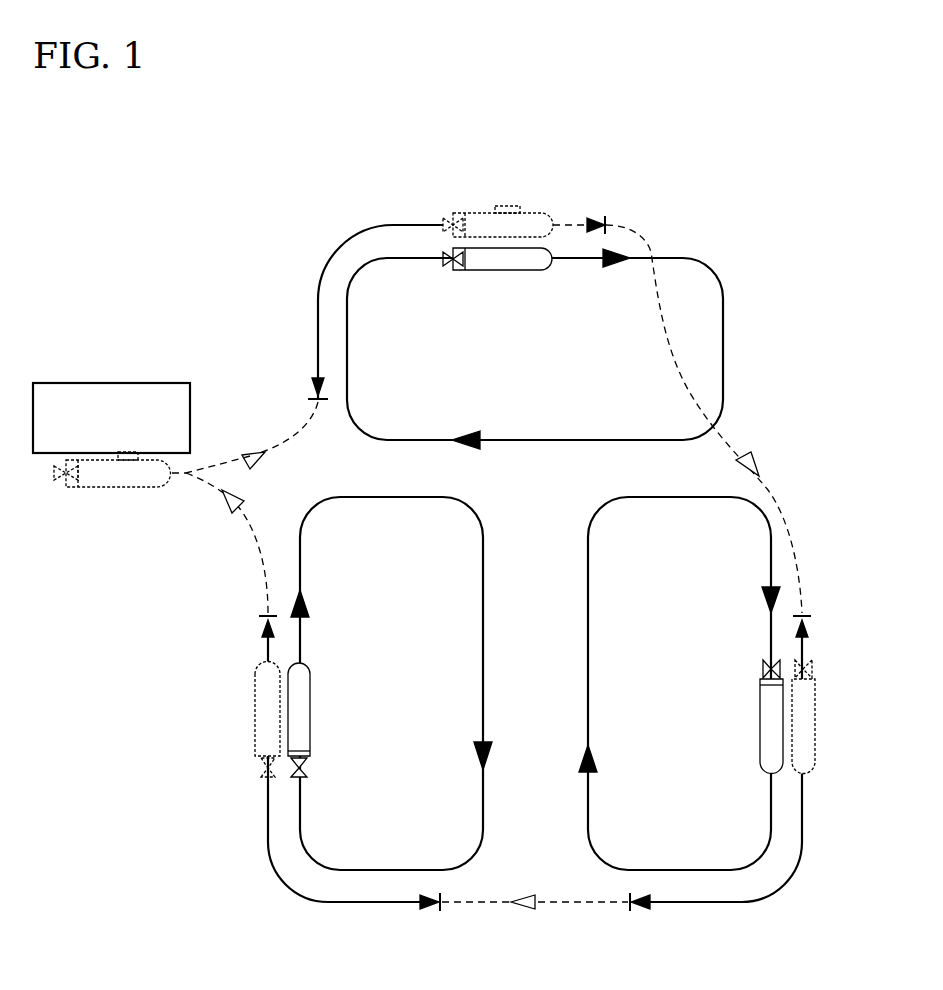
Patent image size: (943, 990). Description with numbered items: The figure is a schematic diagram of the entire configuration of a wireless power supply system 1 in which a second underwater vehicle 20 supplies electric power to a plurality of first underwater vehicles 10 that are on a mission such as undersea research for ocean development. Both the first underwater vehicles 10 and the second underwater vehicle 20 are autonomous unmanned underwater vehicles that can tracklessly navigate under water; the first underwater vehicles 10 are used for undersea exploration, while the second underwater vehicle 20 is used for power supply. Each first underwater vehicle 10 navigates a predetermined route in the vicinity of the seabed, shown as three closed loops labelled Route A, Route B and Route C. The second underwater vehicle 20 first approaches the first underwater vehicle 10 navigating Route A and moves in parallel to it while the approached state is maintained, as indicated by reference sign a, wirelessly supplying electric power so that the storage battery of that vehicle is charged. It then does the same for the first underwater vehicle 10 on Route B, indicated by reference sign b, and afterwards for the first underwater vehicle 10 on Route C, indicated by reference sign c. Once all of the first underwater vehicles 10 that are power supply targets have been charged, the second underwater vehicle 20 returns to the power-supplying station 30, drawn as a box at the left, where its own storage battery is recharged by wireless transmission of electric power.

The wireless power supply system 1 is at (170, 210).
The first underwater vehicle 10 is at (480, 272).
The second underwater vehicle 20 is at (100, 489).
The power-supplying station 30 is at (87, 383).
The Route A is at (527, 440).
The Route B is at (680, 870).
The Route C is at (383, 870).
The parallel movement along Route A a is at (340, 244).
The parallel movement along Route B b is at (786, 878).
The parallel movement along Route C c is at (275, 855).